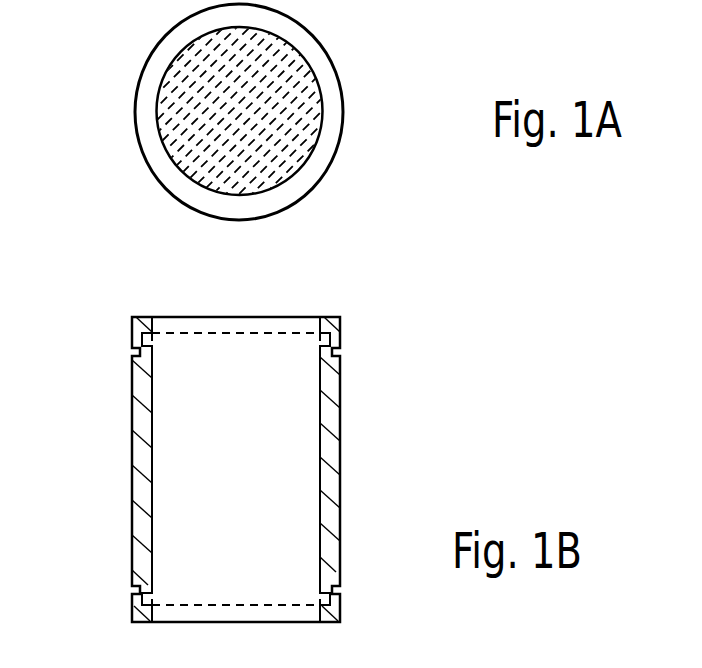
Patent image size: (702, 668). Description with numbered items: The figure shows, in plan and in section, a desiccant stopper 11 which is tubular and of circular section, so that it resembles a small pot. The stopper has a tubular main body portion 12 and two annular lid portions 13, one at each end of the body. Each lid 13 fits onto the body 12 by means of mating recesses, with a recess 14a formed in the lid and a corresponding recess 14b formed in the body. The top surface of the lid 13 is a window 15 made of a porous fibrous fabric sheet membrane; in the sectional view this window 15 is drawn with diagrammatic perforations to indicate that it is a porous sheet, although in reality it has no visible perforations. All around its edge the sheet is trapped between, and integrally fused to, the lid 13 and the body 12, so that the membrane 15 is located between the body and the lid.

In FIG. 1A, the desiccant stopper 11 is at (356, 160).
In FIG. 1B, the desiccant stopper 11 is at (370, 477).
In FIG. 1B, the tubular main body portion 12 is at (140, 446).
In FIG. 1B, the annular lid portion 13 is at (133, 317).
In FIG. 1B, the recess in the lid 14a is at (322, 335).
In FIG. 1B, the recess in the body 14b is at (421, 356).
In FIG. 1A, the window 15 is at (283, 103).
In FIG. 1B, the window 15 is at (268, 333).